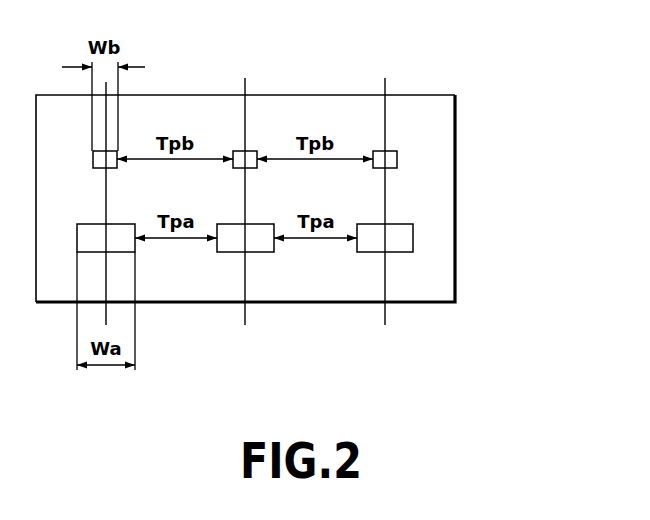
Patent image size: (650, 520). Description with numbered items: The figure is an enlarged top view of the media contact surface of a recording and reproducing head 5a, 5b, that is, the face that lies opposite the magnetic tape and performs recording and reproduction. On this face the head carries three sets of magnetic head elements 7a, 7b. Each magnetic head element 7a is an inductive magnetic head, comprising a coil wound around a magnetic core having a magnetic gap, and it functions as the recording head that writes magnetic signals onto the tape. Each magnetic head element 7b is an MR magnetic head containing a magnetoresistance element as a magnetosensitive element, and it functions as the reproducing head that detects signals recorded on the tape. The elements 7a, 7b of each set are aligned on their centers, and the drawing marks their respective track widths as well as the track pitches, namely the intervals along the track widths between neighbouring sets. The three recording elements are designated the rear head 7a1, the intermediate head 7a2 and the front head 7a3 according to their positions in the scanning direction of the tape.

The recording and reproducing head 5a is at (298, 198).
The recording and reproducing head 5b is at (435, 119).
The magnetic head element 7b is at (397, 158).
The magnetic head element 7a is at (299, 292).
The rear head 7a1 is at (135, 251).
The intermediate head 7a2 is at (263, 252).
The front head 7a3 is at (402, 252).